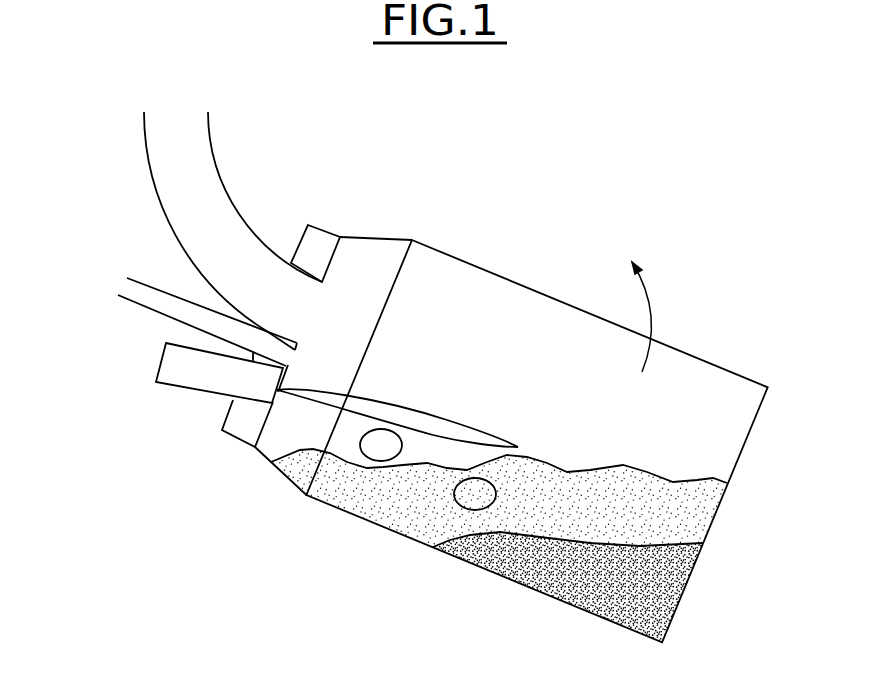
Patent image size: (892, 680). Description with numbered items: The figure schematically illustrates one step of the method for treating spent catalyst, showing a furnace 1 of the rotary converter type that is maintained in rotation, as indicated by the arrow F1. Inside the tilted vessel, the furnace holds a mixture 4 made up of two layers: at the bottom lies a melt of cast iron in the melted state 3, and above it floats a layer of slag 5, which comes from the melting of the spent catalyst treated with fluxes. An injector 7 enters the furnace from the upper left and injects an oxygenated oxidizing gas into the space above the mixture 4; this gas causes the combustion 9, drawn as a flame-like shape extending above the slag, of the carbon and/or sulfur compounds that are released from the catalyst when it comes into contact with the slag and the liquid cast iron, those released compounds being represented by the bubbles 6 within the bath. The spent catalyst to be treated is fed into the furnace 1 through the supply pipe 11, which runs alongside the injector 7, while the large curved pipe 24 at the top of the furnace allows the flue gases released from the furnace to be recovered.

The furnace 1 is at (483, 578).
The melt of cast iron in the melted state 3 is at (579, 587).
The mixture 4 is at (537, 545).
The layer of slag 5 is at (712, 512).
The bubbles 6 is at (381, 445).
The injector 7 is at (165, 365).
The combustion 9 is at (408, 420).
The supply pipe 11 is at (141, 290).
The pipe 24 is at (242, 212).
The arrow F1 is at (652, 316).